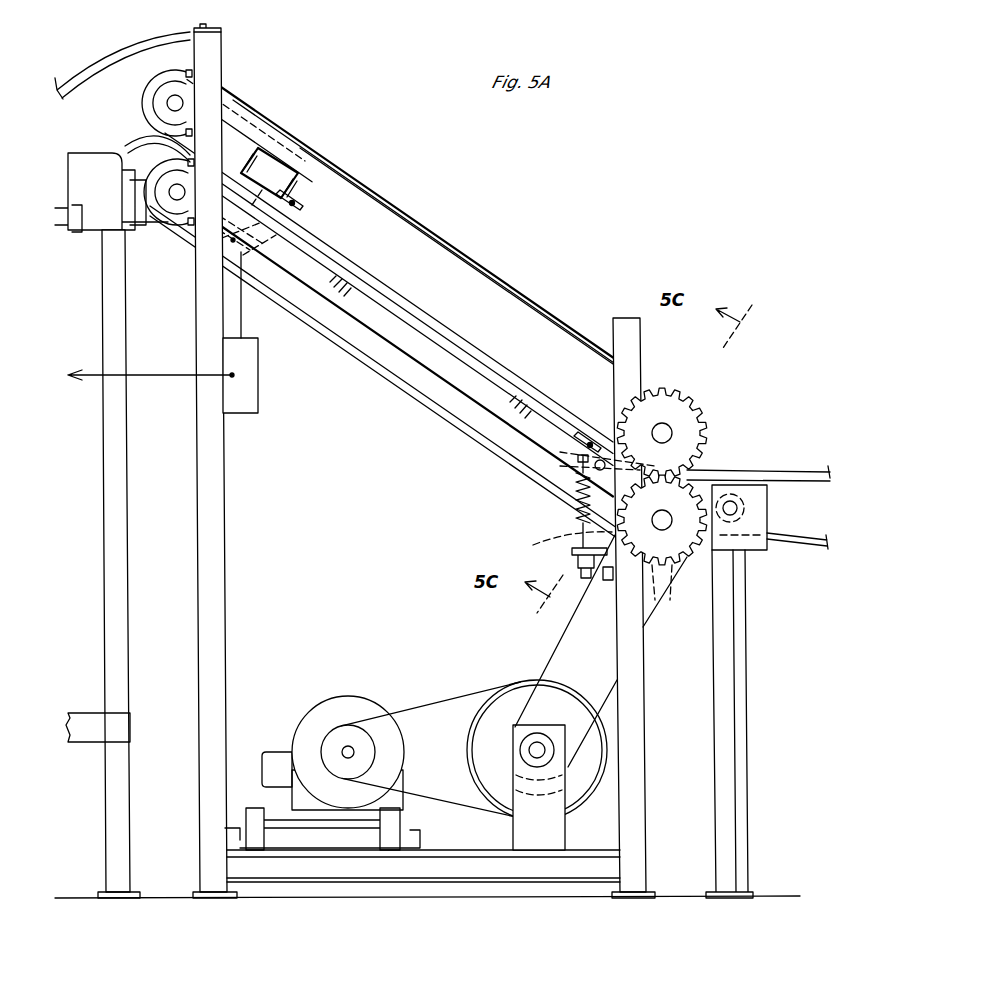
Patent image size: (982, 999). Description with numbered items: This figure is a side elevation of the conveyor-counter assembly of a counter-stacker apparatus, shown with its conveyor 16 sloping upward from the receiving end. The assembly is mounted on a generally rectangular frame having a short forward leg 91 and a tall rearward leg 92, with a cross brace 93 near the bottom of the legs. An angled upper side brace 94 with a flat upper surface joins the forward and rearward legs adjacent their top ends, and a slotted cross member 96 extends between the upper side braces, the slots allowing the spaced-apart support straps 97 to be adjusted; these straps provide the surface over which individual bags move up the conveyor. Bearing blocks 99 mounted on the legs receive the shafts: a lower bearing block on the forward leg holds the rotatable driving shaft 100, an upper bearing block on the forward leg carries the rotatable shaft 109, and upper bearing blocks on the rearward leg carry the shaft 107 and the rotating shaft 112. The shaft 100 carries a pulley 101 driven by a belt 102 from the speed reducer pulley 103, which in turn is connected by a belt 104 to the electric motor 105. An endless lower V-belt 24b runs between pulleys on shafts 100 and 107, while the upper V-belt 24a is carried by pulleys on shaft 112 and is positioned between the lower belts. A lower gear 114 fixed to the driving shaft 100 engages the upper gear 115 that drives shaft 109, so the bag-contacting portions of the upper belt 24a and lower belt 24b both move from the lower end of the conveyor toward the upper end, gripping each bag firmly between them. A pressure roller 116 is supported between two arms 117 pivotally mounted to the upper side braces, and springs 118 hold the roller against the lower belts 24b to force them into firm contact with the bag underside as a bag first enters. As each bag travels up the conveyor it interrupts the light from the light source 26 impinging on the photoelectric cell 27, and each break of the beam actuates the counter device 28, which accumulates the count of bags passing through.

The conveyor frame rail 16 is at (427, 216).
The upper V-belt 24a is at (470, 262).
The lower V-belt 24b is at (437, 406).
The light source 26 is at (286, 178).
The photoelectric cell 27 is at (252, 242).
The counter device 28 is at (268, 401).
The forward leg 91 is at (642, 668).
The rearward leg 92 is at (224, 513).
The cross brace 93 is at (455, 862).
The upper side brace 94 is at (398, 330).
The slotted cross member 96 is at (292, 206).
The support strap 97 is at (435, 325).
The bearing block 99 is at (145, 128).
The rotatable shaft 100 is at (668, 560).
The pulley 101 is at (572, 540).
The belt 102 is at (556, 632).
The speed reducer pulley 103 is at (482, 745).
The belt 104 is at (430, 700).
The electric motor 105 is at (350, 696).
The shaft 107 is at (170, 192).
The rotatable shaft 109 is at (670, 426).
The rotating shaft 112 is at (168, 103).
The lower gear 114 is at (698, 548).
The upper gear 115 is at (706, 437).
The pressure roller 116 is at (558, 450).
The arm 117 is at (594, 465).
The spring 118 is at (574, 500).